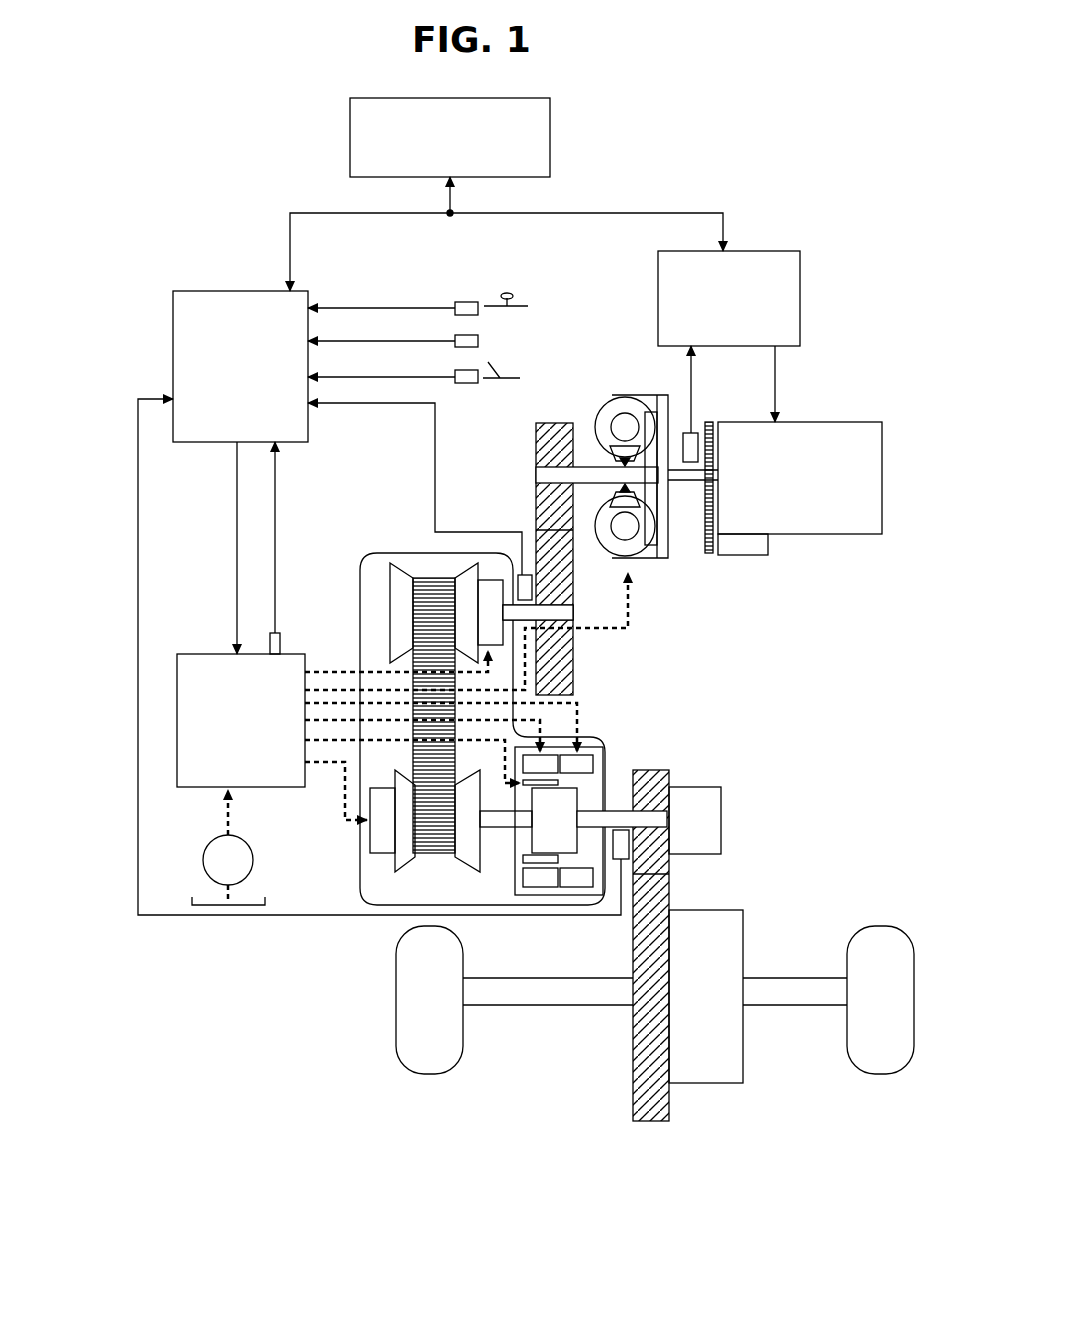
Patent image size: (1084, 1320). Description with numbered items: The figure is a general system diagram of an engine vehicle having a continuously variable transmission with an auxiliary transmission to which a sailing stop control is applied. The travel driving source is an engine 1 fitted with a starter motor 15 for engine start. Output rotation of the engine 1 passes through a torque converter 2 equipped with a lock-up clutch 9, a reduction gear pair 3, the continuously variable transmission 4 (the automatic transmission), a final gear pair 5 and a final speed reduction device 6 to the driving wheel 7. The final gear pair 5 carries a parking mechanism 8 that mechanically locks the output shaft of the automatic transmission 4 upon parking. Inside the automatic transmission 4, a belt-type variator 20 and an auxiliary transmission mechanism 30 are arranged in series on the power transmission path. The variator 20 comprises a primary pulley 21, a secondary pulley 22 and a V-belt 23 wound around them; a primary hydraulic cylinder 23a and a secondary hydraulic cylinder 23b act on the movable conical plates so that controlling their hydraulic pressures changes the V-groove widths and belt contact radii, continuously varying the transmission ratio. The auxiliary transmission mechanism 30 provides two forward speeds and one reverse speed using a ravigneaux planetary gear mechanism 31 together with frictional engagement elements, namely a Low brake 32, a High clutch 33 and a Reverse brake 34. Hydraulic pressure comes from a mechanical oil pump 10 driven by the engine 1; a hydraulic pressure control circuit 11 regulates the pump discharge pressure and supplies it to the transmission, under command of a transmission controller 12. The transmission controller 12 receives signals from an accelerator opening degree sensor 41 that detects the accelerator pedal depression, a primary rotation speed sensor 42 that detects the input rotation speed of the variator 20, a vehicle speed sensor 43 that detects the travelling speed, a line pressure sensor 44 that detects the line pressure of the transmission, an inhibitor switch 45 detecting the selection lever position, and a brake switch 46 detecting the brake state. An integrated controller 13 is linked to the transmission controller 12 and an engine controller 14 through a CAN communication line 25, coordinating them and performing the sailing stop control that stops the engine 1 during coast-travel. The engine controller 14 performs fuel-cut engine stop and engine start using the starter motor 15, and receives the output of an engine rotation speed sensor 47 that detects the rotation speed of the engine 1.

The engine 1 is at (865, 440).
The torque converter 2 is at (649, 471).
The reduction gear pair 3 is at (557, 420).
The continuously variable transmission 4 is at (390, 550).
The final gear pair 5 is at (654, 1124).
The final speed reduction device 6 is at (721, 1070).
The driving wheel 7 is at (432, 1062).
The parking mechanism 8 is at (704, 802).
The lock-up clutch 9 is at (668, 513).
The mechanical oil pump 10 is at (250, 841).
The hydraulic pressure control circuit 11 is at (194, 666).
The transmission controller 12 is at (240, 304).
The integrated controller 13 is at (552, 116).
The engine controller 14 is at (778, 251).
The starter motor 15 is at (744, 556).
The variator 20 is at (442, 569).
The primary pulley 21 is at (405, 625).
The secondary pulley 22 is at (411, 838).
The V-belt 23 is at (427, 580).
The primary hydraulic cylinder 23a is at (490, 590).
The secondary hydraulic cylinder 23b is at (383, 827).
The CAN communication line 25 is at (568, 213).
The auxiliary transmission mechanism 30 is at (599, 773).
The ravigneaux planetary gear mechanism 31 is at (558, 835).
The Low brake 32 is at (546, 757).
The High clutch 33 is at (527, 866).
The Reverse brake 34 is at (588, 757).
The accelerator opening degree sensor 41 is at (474, 384).
The primary rotation speed sensor 42 is at (522, 583).
The vehicle speed sensor 43 is at (669, 838).
The line pressure sensor 44 is at (281, 640).
The inhibitor switch 45 is at (467, 308).
The brake switch 46 is at (480, 341).
The engine rotation speed sensor 47 is at (687, 430).